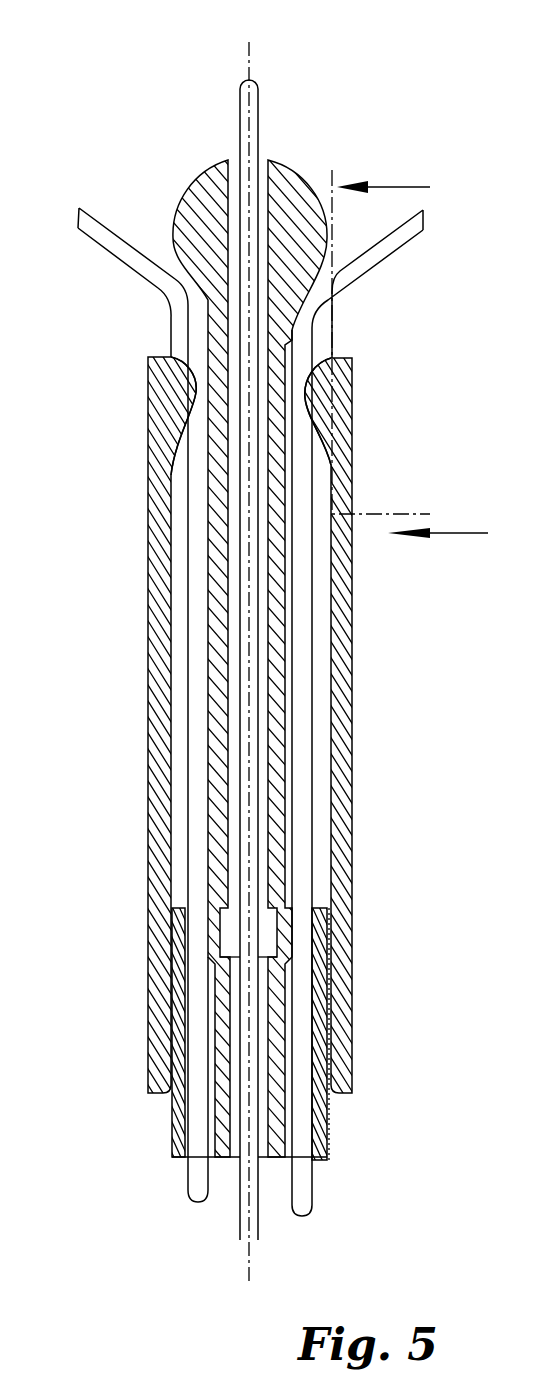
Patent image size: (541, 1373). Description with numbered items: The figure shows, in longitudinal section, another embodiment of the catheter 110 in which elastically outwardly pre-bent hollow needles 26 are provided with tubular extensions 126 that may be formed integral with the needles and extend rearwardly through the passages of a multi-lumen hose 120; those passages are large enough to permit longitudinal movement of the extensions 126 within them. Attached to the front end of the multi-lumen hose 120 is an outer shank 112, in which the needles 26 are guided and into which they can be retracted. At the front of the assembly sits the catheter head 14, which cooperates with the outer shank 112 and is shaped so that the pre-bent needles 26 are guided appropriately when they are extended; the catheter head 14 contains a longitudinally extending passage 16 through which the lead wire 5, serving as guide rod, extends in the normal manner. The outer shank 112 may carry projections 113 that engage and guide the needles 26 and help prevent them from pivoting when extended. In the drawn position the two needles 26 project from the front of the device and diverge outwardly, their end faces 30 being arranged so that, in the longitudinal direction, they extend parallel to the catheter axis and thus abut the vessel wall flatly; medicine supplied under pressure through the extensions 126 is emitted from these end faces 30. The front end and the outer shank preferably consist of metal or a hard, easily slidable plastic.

The lead wire 5 is at (255, 80).
The catheter 110 is at (294, 114).
The longitudinally extending passage 16 is at (237, 156).
The catheter head 14 is at (288, 163).
The end face 30 is at (77, 220).
The hollow needle 26 is at (118, 245).
The projection 113 is at (352, 375).
The outer shank 112 is at (352, 755).
The multi-lumen hose 120 is at (280, 1113).
The tubular extension 126 is at (193, 1182).